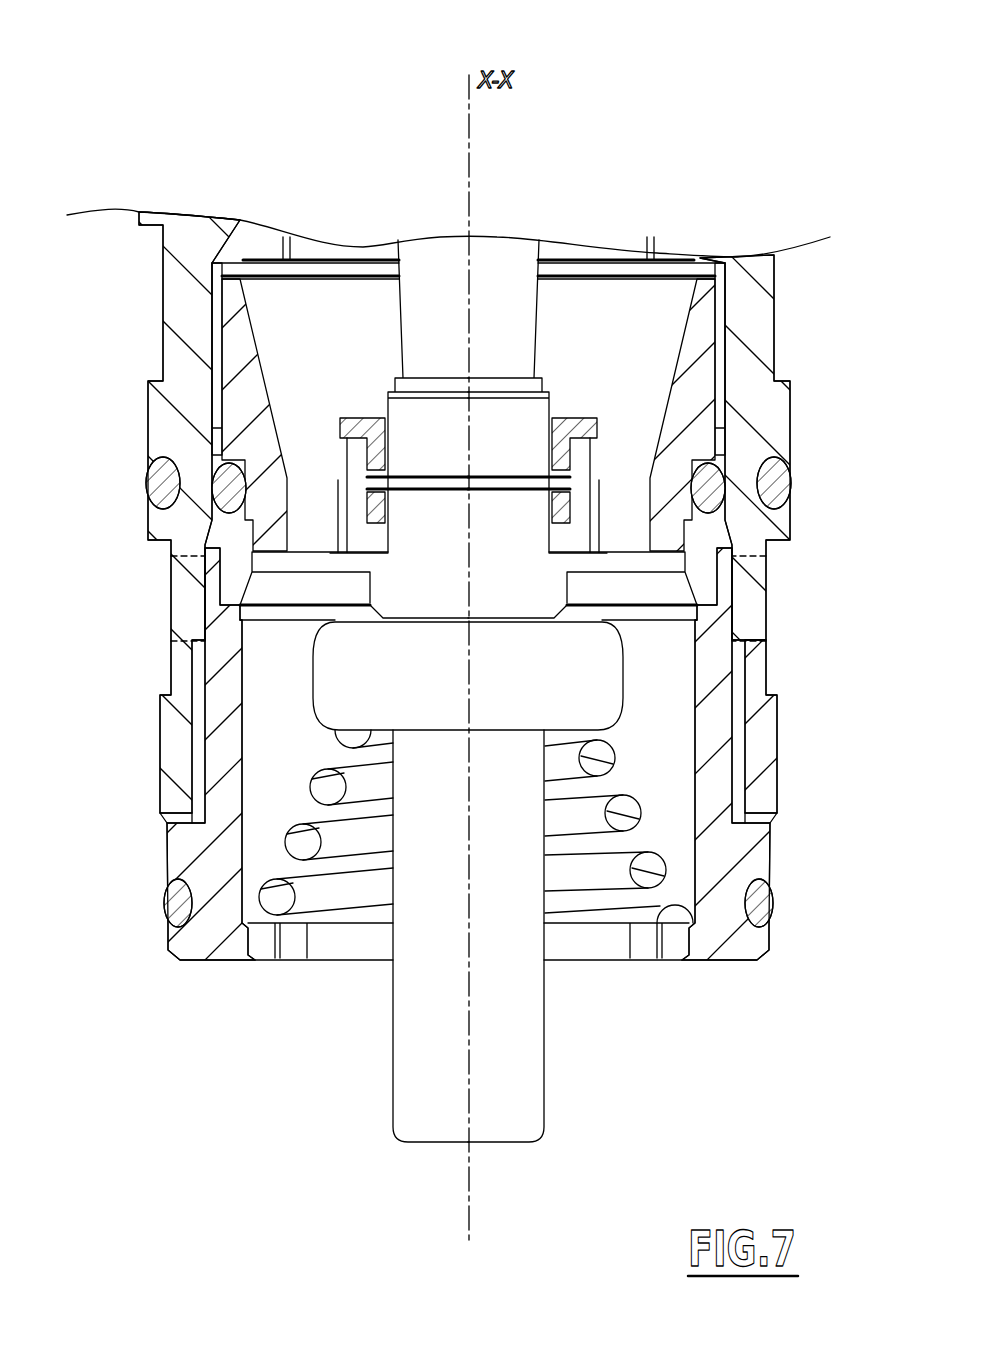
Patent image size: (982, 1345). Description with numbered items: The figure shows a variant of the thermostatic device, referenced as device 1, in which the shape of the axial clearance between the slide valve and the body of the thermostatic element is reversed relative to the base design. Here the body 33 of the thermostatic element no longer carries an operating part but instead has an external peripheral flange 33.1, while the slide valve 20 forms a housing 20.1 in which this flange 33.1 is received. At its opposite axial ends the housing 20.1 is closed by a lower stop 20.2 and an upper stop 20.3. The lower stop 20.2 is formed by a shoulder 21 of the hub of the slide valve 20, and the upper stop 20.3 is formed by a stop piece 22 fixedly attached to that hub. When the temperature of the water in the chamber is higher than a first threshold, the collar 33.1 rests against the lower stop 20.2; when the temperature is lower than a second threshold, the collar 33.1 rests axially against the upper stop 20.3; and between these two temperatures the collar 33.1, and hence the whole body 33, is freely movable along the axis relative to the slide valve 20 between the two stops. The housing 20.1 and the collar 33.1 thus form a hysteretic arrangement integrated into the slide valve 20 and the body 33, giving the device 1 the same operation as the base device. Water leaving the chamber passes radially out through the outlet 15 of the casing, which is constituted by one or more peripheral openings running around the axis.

The device 1 is at (298, 185).
The slide valve 20 is at (208, 344).
The housing 20.1 is at (320, 527).
The lower stop 20.2 is at (578, 474).
The upper stop 20.3 is at (578, 510).
The shoulder 21 is at (562, 527).
The stop piece 22 is at (577, 468).
The body of the thermostatic element 33 is at (510, 1098).
The external peripheral flange 33.1 is at (367, 488).
The outlet 15 is at (745, 644).